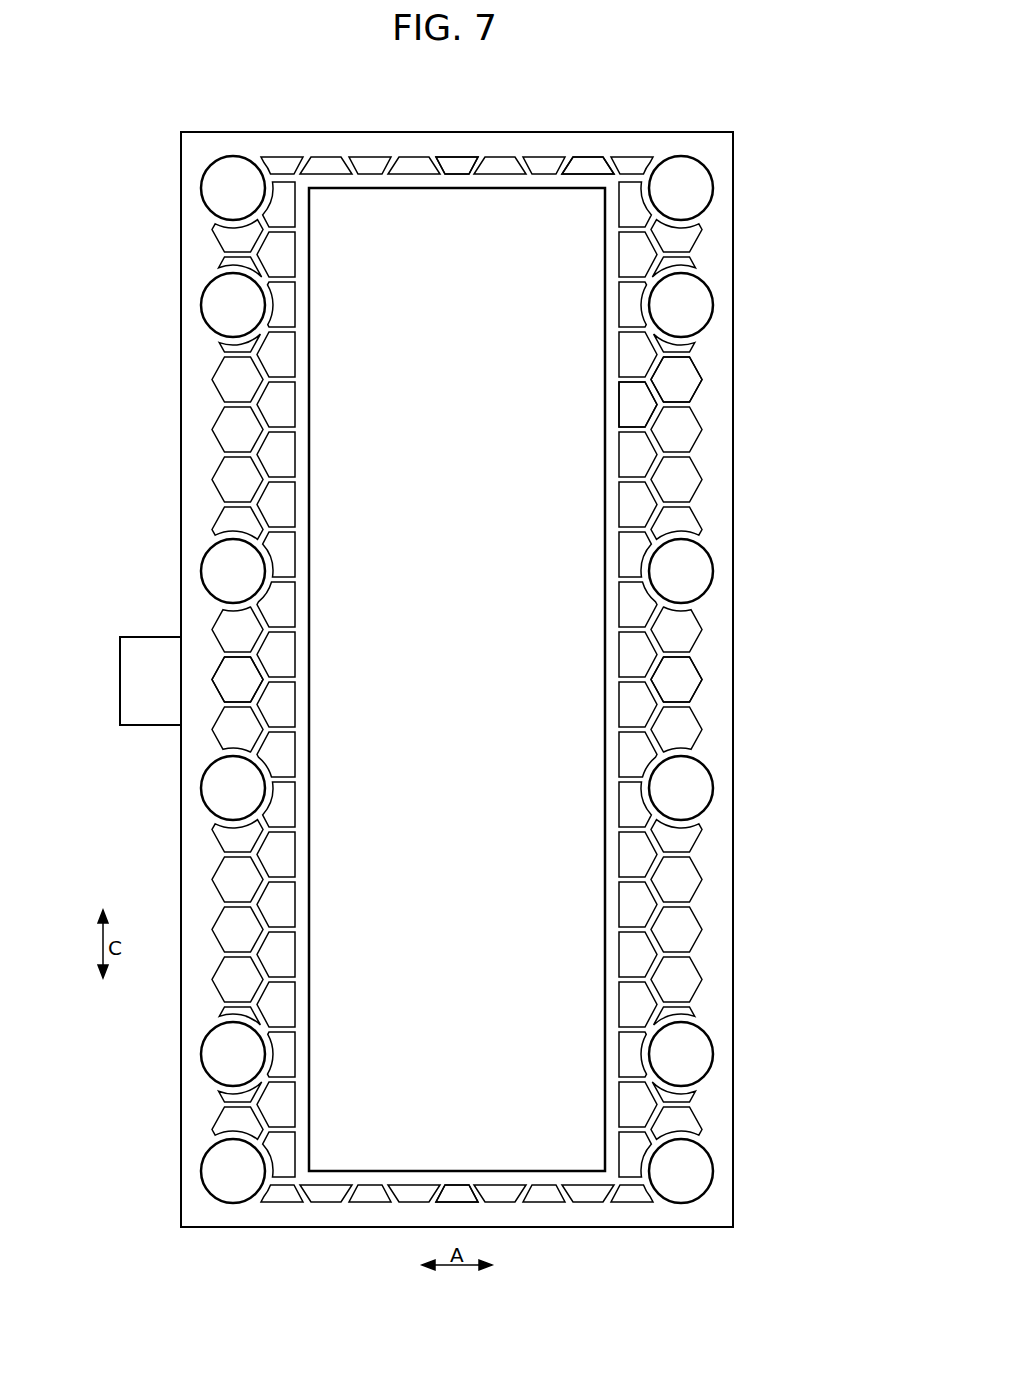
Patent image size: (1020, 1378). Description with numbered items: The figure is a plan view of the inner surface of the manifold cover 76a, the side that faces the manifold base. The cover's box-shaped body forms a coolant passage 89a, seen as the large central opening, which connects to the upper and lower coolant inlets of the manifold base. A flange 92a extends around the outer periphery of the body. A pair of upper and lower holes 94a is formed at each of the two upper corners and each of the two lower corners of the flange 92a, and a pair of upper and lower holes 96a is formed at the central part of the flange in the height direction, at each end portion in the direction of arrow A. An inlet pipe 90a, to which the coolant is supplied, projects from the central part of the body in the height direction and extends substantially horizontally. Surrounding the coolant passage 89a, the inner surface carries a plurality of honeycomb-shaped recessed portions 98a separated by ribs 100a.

The manifold cover 76a is at (716, 84).
The flange 92a is at (590, 152).
The coolant passage 89a is at (370, 413).
The holes 94a is at (222, 188).
The holes 96a is at (222, 571).
The inlet pipe 90a is at (130, 688).
The recessed portions 98a is at (682, 388).
The ribs 100a is at (655, 390).